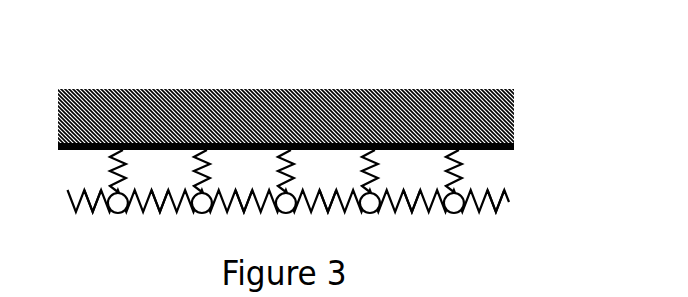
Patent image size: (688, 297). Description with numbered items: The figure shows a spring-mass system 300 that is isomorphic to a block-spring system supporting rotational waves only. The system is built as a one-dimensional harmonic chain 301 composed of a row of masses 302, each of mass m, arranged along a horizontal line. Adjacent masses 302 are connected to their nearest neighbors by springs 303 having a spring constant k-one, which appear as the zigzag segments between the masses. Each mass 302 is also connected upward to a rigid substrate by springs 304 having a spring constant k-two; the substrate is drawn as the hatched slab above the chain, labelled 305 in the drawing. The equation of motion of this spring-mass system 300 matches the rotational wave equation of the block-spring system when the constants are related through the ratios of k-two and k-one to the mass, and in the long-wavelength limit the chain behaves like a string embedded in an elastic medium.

The spring-mass system 300 is at (545, 80).
The one-dimensional harmonic chain 301 is at (530, 199).
The masses 302 is at (454, 238).
The springs 303 is at (496, 238).
The springs 304 is at (484, 173).
The rigid substrate layer 305 is at (85, 102).